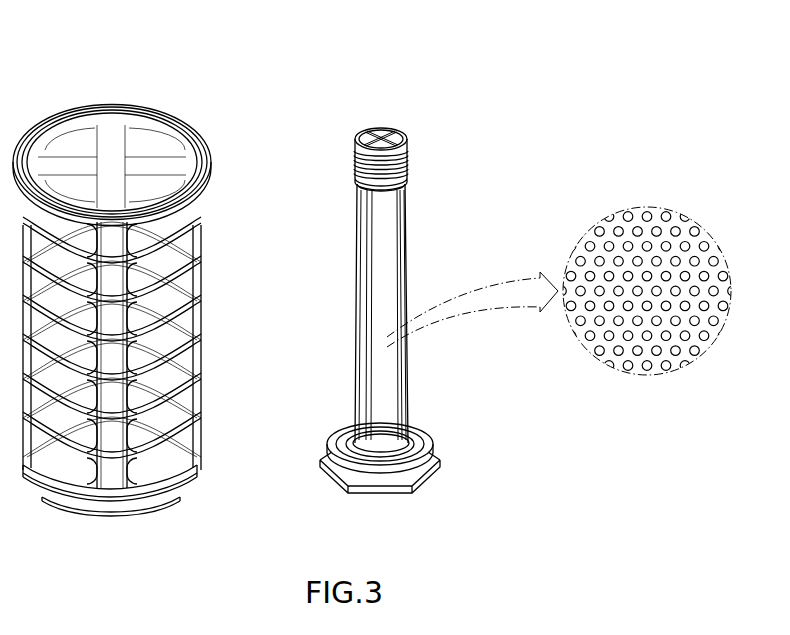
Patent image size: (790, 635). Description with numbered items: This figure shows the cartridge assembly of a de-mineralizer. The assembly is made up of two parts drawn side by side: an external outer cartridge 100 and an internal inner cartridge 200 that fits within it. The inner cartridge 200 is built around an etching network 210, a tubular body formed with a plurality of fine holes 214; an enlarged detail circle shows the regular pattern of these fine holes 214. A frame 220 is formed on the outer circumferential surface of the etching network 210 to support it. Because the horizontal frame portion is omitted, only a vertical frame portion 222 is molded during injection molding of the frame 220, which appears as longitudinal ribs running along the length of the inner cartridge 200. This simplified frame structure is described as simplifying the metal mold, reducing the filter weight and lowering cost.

The outer cartridge 100 is at (153, 95).
The inner cartridge 200 is at (430, 258).
The etching network 210 is at (390, 355).
The fine holes 214 is at (637, 365).
The frame 220 is at (418, 199).
The vertical frame portion 222 is at (405, 240).